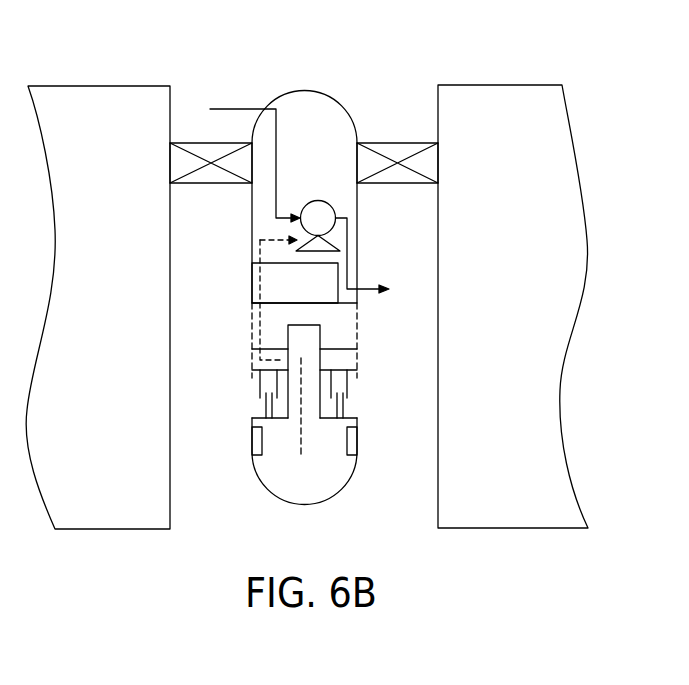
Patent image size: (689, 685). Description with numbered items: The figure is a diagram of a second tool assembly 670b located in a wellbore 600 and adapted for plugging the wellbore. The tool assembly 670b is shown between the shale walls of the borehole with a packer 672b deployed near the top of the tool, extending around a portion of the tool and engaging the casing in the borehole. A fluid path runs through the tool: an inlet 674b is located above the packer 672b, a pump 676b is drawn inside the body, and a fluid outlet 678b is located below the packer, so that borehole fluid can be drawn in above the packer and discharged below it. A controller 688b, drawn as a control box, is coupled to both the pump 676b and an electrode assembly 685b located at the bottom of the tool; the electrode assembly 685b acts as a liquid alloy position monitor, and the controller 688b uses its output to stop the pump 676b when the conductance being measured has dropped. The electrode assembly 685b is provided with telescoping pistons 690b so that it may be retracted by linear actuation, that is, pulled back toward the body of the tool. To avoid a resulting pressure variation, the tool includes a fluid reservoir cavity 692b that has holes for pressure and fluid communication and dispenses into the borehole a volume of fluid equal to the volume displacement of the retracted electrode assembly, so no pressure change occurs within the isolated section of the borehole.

The wellbore 600 is at (181, 77).
The tool assembly 670b is at (303, 90).
The packer 672b is at (408, 143).
The inlet 674b is at (251, 108).
The pump 676b is at (318, 200).
The fluid outlet 678b is at (366, 290).
The electrode assembly 685b is at (369, 445).
The controller 688b is at (252, 278).
The telescoping pistons 690b is at (347, 398).
The fluid reservoir cavity 692b is at (352, 327).